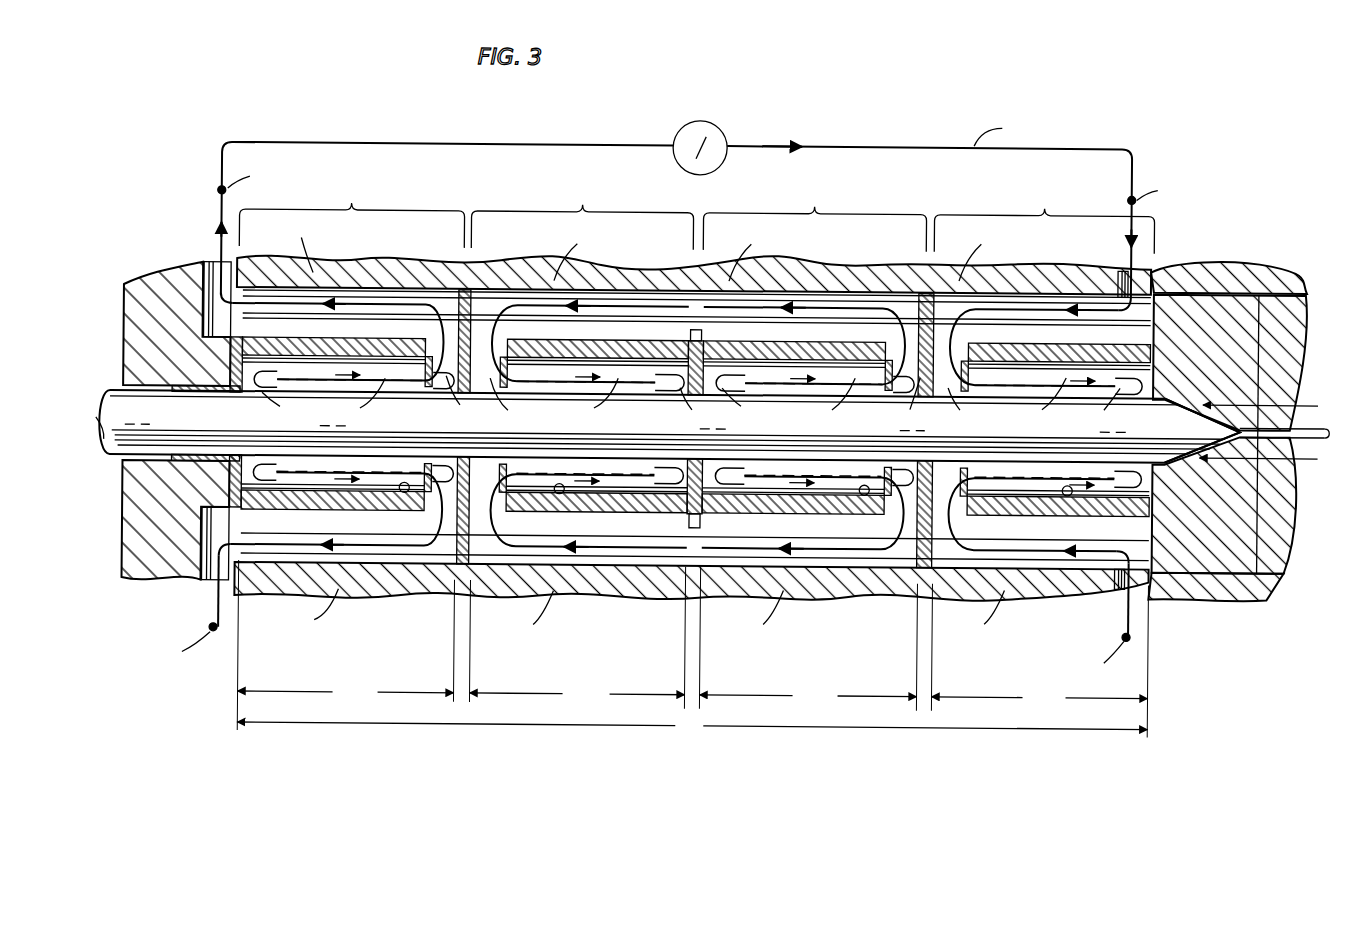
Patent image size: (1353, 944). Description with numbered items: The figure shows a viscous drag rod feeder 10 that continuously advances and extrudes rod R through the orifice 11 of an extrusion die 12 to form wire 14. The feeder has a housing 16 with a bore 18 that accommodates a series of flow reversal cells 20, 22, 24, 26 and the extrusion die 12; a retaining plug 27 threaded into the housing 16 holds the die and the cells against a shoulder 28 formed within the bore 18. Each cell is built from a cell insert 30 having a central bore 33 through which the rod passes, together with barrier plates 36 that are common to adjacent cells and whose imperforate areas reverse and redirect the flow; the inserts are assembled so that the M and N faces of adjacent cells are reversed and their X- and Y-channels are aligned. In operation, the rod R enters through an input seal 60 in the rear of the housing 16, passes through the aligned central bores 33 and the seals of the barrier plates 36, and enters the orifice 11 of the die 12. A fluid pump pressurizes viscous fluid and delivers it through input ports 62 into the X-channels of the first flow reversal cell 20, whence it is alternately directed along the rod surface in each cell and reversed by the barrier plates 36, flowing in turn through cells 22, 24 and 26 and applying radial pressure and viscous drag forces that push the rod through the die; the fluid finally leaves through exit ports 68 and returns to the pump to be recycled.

The viscous drag rod feeder 10 is at (1160, 150).
The orifice 11 is at (1185, 402).
The extrusion die 12 is at (1215, 566).
The wire 14 is at (1325, 434).
The housing 16 is at (772, 258).
The bore 18 is at (318, 291).
The first flow reversal cell 20 is at (1043, 377).
The second flow reversal cell 22 is at (814, 369).
The third flow reversal cell 24 is at (581, 367).
The fourth flow reversal cell 26 is at (342, 371).
The retaining plug 27 is at (1280, 540).
The shoulder 28 is at (226, 486).
The cell insert 30 is at (366, 335).
The central bore 33 is at (405, 491).
The barrier plate 36 is at (922, 556).
The input seal 60 is at (192, 390).
The input ports 62 is at (1122, 272).
The exit ports 68 is at (212, 270).